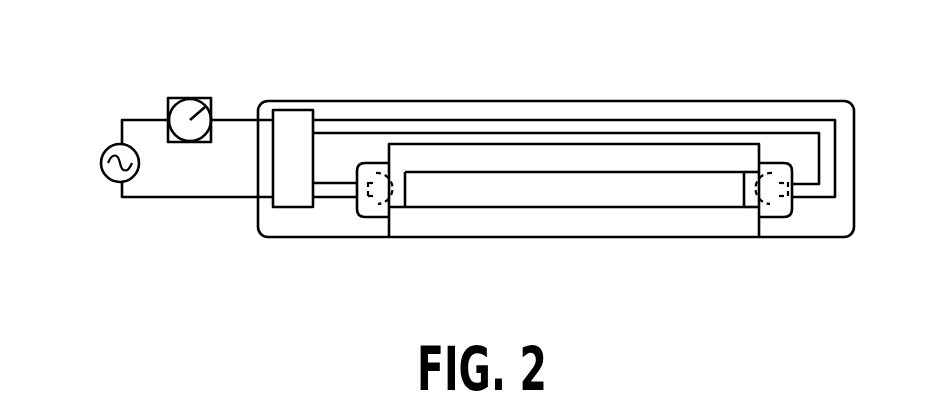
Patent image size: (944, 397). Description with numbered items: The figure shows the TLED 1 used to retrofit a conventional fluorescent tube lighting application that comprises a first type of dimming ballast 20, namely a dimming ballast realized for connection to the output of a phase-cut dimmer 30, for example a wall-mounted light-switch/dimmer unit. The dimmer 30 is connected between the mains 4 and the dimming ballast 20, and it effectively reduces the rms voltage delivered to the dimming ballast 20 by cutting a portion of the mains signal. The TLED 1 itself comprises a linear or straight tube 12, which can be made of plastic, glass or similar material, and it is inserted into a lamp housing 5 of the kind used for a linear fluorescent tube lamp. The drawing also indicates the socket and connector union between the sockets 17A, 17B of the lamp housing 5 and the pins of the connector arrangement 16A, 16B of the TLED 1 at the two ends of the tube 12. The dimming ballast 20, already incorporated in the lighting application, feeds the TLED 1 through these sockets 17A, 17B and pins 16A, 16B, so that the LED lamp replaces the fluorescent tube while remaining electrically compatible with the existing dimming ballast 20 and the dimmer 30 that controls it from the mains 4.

The TLED 1 is at (621, 207).
The mains 4 is at (100, 143).
The lamp housing 5 is at (698, 101).
The tube 12 is at (583, 197).
The connector arrangement pins 16A is at (396, 197).
The connector arrangement pins 16B is at (752, 197).
The socket 17A is at (373, 212).
The socket 17B is at (775, 210).
The dimming ballast 20 is at (292, 118).
The phase-cut dimmer 30 is at (194, 98).